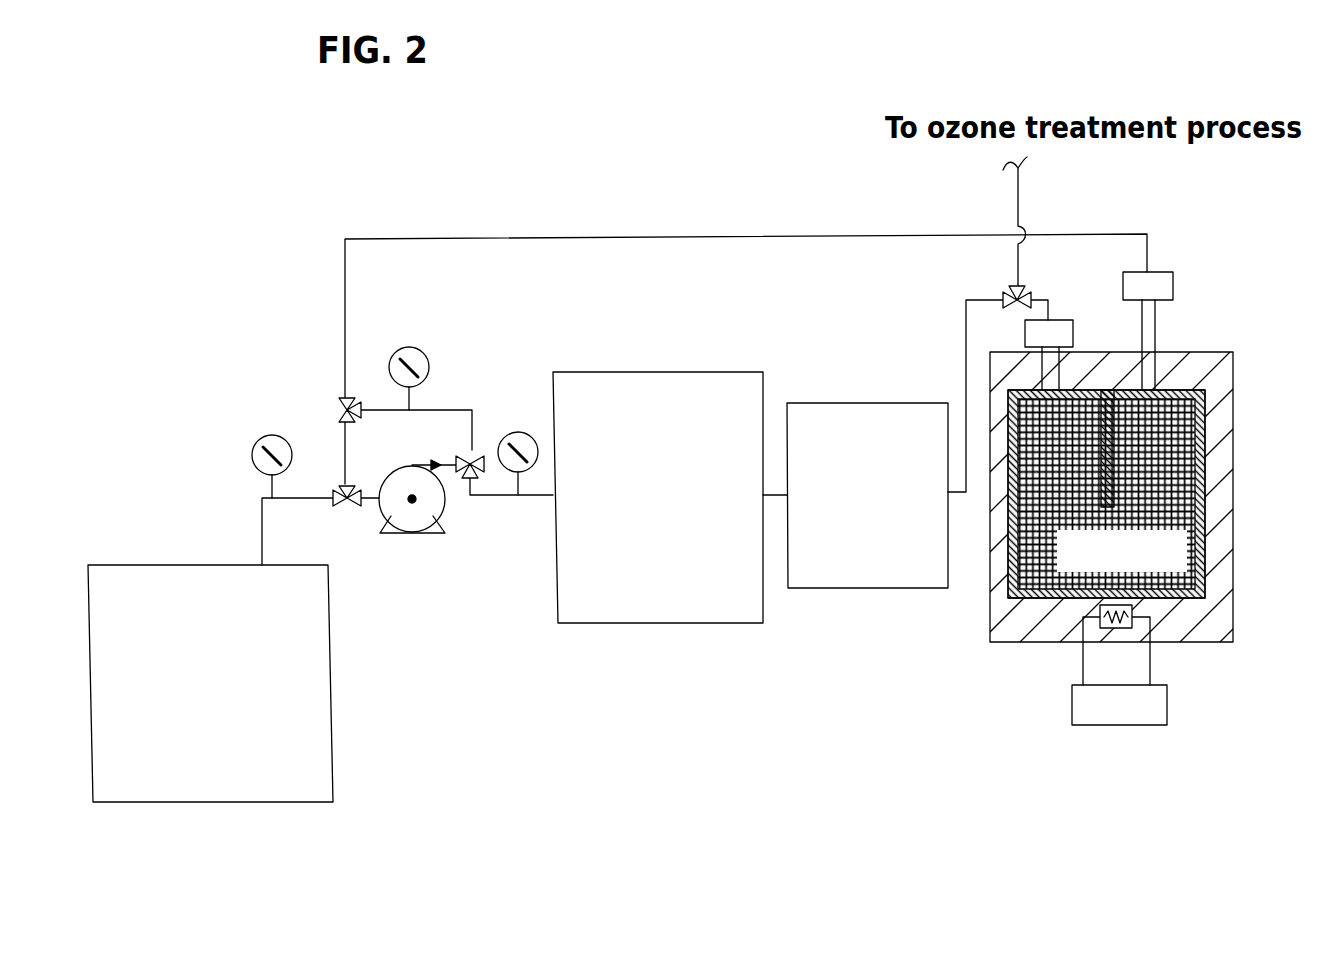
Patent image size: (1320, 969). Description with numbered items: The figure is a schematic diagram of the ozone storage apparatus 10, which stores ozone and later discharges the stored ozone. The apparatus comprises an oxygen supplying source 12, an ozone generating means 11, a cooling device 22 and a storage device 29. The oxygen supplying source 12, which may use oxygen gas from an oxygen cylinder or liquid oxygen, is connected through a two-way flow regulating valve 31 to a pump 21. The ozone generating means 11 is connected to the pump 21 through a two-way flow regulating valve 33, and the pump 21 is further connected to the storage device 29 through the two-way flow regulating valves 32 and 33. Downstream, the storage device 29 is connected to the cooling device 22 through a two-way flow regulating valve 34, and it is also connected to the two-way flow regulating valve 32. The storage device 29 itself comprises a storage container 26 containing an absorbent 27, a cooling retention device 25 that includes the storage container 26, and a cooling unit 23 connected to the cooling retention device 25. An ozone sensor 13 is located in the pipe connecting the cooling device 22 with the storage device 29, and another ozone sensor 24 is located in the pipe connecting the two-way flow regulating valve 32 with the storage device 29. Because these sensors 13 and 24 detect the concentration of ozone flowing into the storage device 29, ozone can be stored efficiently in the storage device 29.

The ozone storage apparatus 10 is at (753, 110).
The ozone generating means 11 is at (603, 615).
The oxygen supplying source 12 is at (318, 790).
The ozone sensor 13 is at (1068, 320).
The pump 21 is at (412, 528).
The cooling device 22 is at (920, 580).
The cooling unit 23 is at (1112, 727).
The ozone sensor 24 is at (1168, 280).
The cooling retention device 25 is at (1044, 625).
The storage container 26 is at (1193, 607).
The absorbent 27 is at (1205, 433).
The storage device 29 is at (1213, 340).
The two-way flow regulating valve 31 is at (355, 503).
The two-way flow regulating valve 32 is at (342, 410).
The two-way flow regulating valve 33 is at (473, 458).
The two-way flow regulating valve 34 is at (1005, 298).